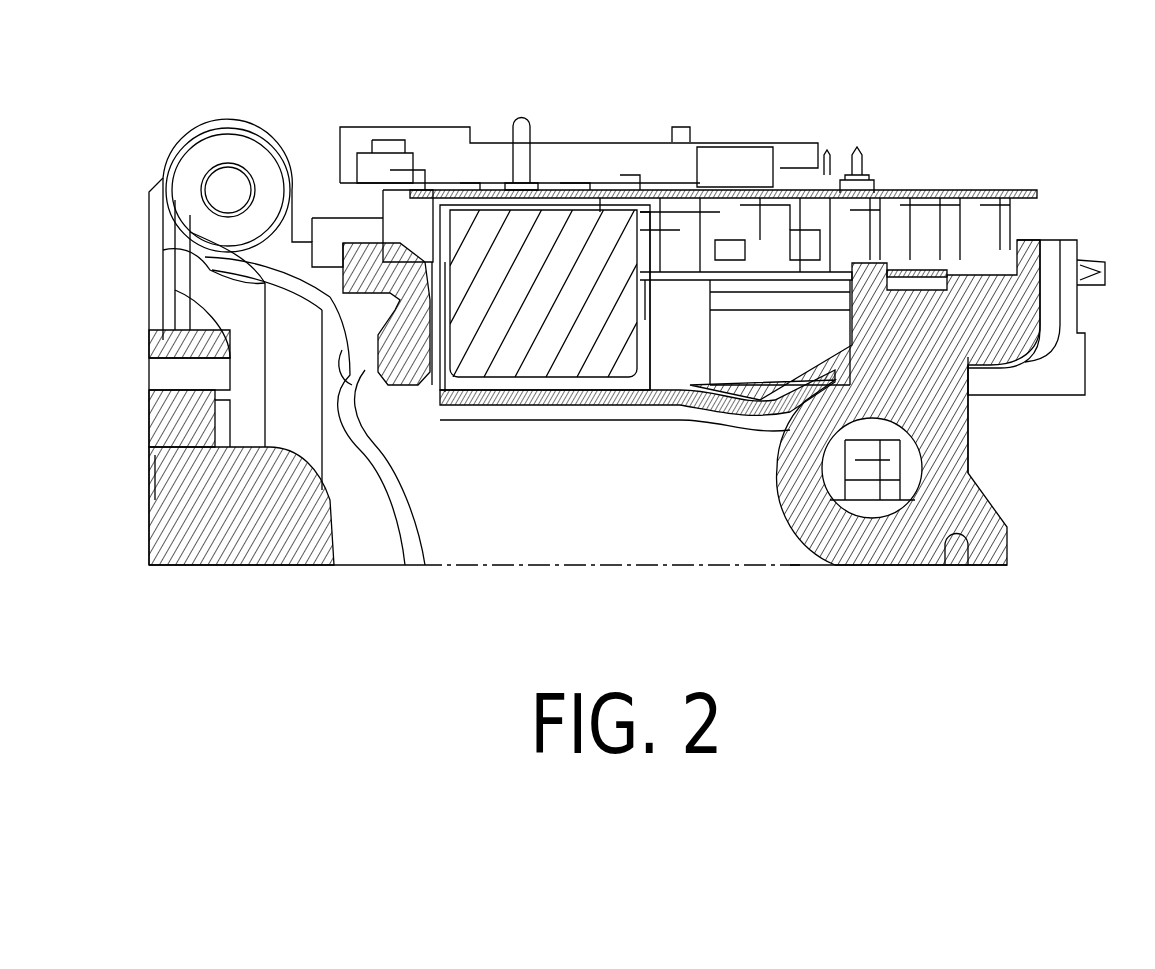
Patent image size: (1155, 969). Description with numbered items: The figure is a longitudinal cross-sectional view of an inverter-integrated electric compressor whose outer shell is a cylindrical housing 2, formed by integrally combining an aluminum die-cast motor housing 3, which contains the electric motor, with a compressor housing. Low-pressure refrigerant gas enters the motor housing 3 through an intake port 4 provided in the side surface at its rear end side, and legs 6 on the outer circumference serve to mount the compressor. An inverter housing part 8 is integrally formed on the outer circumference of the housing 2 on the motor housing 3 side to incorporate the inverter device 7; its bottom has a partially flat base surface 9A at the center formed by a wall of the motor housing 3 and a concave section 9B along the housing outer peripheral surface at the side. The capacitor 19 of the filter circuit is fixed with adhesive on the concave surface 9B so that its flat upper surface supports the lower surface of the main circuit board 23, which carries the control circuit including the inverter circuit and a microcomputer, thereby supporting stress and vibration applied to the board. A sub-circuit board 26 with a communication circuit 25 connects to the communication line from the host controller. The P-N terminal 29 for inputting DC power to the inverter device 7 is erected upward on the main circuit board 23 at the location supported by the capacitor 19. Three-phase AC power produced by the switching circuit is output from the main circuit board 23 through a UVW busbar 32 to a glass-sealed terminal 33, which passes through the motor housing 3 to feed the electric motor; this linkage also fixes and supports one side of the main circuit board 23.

The housing 2 is at (298, 565).
The motor housing 3 is at (643, 540).
The intake port 4 is at (858, 500).
The leg 6 is at (228, 150).
The inverter device 7 is at (862, 160).
The inverter housing part 8 is at (1040, 294).
The base surface 9A is at (664, 278).
The concave section 9B is at (545, 380).
The capacitor 19 is at (552, 240).
The main circuit board 23 is at (727, 195).
The communication circuit 25 is at (732, 252).
The sub-circuit board 26 is at (805, 275).
The P-N terminal 29 is at (520, 125).
The UVW busbar 32 is at (455, 155).
The glass-sealed terminal 33 is at (355, 230).